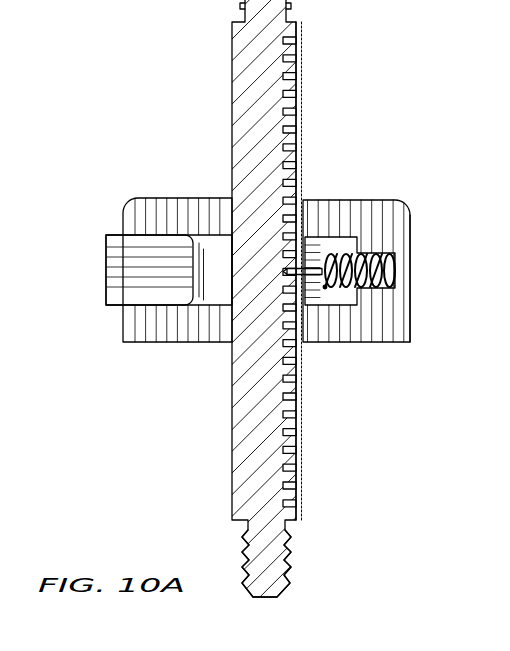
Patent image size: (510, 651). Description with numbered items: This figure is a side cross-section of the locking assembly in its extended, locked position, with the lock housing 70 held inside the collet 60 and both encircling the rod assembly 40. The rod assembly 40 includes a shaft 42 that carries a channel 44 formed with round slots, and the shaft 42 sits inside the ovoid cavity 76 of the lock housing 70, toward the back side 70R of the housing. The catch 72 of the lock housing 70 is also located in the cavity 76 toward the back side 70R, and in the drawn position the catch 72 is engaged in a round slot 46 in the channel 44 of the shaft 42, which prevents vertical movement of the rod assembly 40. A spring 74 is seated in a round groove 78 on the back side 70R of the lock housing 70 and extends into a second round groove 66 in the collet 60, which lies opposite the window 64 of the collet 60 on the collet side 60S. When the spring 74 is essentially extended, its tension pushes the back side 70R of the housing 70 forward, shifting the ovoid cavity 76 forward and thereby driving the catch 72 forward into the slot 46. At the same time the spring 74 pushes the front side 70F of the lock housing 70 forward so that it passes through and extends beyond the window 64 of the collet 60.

The rod assembly 40 is at (243, 314).
The shaft 42 is at (232, 496).
The channel 44 is at (291, 524).
The round slot 46 is at (285, 268).
The collet 60 is at (358, 200).
The housing side wall 60S is at (411, 238).
The window 64 is at (125, 312).
The second round groove 66 is at (370, 288).
The lock housing 70 is at (227, 260).
The front side of the lock housing 70F is at (106, 289).
The back side of the lock housing 70R is at (318, 237).
The catch 72 is at (302, 298).
The spring 74 is at (395, 275).
The ovoid cavity 76 is at (203, 306).
The round groove 78 is at (327, 289).